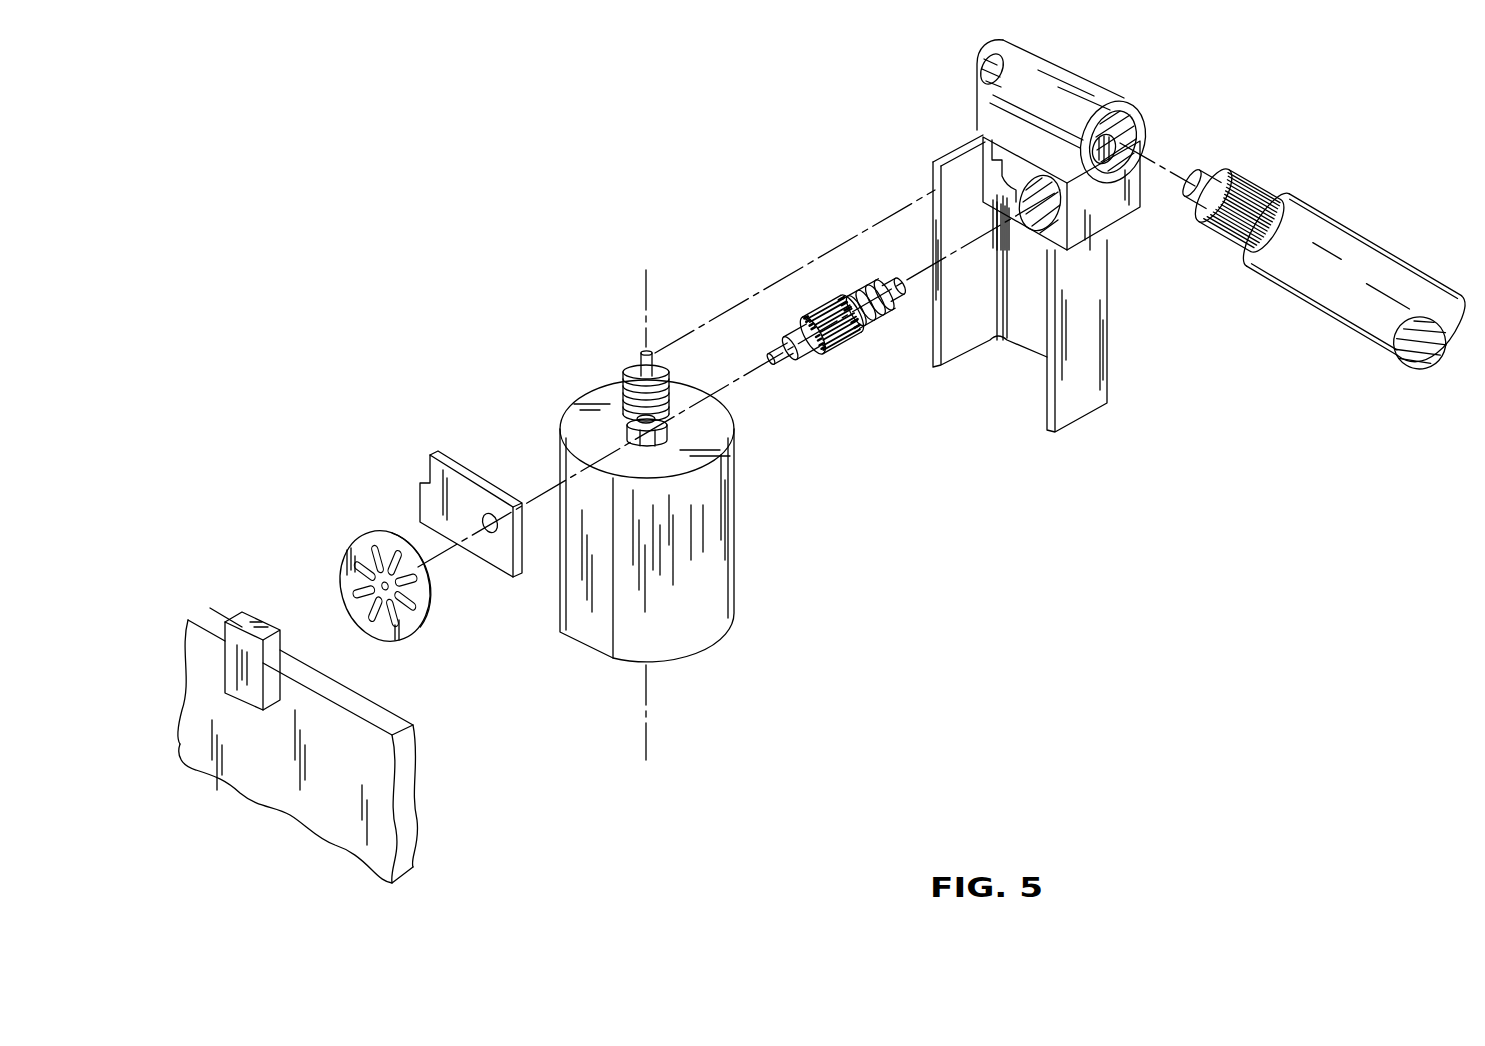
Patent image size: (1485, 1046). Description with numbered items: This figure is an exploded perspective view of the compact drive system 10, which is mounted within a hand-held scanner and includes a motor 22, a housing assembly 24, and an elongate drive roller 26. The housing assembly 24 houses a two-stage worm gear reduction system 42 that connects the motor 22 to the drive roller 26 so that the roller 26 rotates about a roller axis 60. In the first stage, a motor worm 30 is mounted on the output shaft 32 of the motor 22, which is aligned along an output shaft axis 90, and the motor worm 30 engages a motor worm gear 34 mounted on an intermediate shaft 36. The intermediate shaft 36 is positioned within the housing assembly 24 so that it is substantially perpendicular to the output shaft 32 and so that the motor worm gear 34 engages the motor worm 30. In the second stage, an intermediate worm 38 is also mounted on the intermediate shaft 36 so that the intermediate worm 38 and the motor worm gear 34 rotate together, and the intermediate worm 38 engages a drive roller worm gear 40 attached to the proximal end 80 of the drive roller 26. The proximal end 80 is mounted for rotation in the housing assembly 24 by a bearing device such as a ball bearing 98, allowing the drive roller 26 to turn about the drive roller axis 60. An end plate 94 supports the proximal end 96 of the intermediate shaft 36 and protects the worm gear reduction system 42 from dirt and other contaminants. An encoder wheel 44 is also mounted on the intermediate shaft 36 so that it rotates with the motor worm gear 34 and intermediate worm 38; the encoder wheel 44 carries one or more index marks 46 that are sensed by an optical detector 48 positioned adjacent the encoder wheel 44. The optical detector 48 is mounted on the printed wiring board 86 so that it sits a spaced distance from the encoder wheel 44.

The compact drive system 10 is at (486, 229).
The motor 22 is at (697, 659).
The housing assembly 24 is at (1098, 69).
The elongate drive roller 26 is at (1322, 335).
The motor worm 30 is at (624, 373).
The output shaft 32 is at (640, 361).
The motor worm gear 34 is at (823, 370).
The intermediate shaft 36 is at (781, 374).
The intermediate worm 38 is at (864, 346).
The drive roller worm gear 40 is at (1258, 190).
The worm gear reduction system 42 is at (806, 228).
The encoder wheel 44 is at (432, 617).
The index marks 46 is at (362, 548).
The optical detector 48 is at (243, 613).
The roller axis 60 is at (1165, 165).
The proximal end 80 is at (1343, 215).
The printed wiring board 86 is at (420, 824).
The output shaft axis 90 is at (652, 282).
The end plate 94 is at (418, 490).
The proximal end 96 is at (768, 352).
The ball bearing 98 is at (1203, 218).